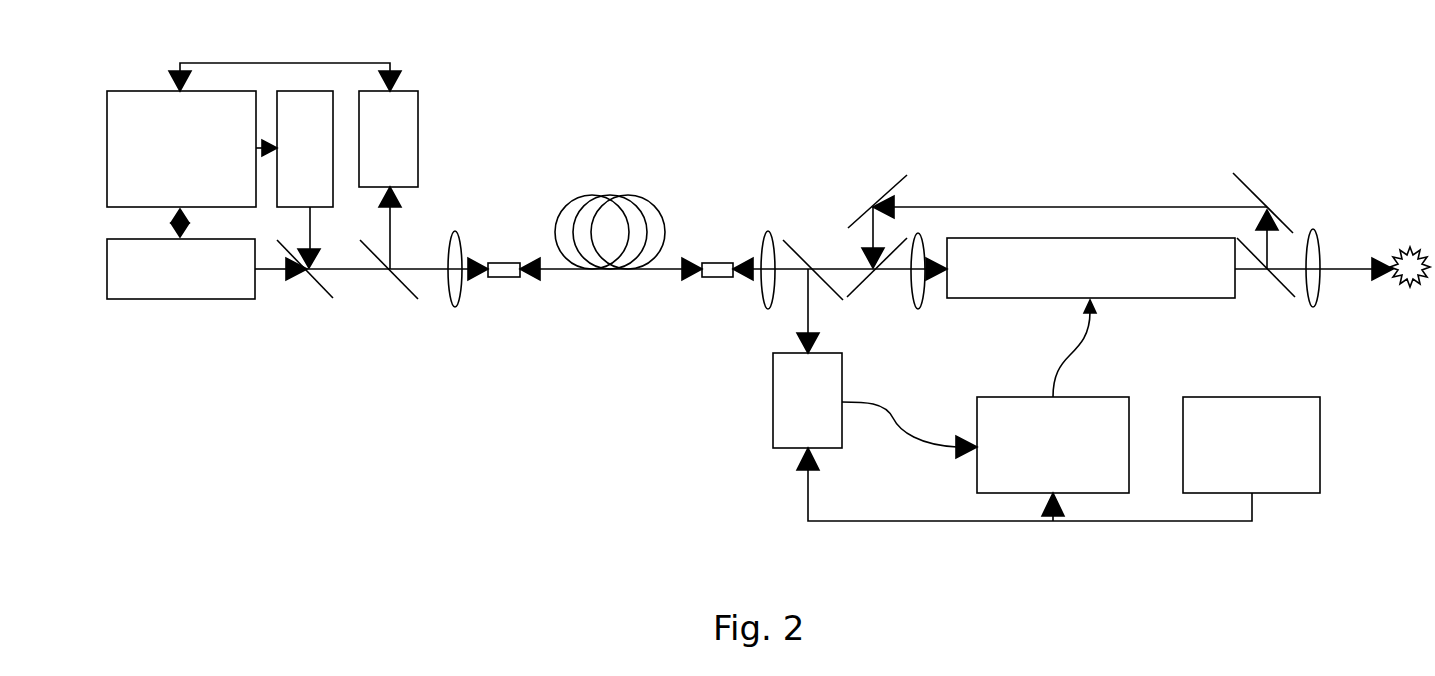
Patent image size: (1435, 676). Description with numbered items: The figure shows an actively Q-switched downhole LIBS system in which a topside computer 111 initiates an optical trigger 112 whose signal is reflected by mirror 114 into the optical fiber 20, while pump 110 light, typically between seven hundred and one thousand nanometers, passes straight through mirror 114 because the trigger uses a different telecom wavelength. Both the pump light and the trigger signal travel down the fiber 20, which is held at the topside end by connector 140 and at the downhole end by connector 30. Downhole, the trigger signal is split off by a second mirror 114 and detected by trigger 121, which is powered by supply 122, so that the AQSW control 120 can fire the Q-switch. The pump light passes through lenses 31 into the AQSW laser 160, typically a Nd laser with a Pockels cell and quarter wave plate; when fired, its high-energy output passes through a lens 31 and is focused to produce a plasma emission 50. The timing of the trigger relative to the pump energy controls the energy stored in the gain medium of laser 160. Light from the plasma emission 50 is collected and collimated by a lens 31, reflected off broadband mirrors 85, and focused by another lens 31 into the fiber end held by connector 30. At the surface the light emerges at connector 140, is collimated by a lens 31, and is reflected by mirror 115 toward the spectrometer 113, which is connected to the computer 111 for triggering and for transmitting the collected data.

The fiber 20 is at (610, 214).
The connector 30 is at (717, 257).
The lens 31 is at (447, 210).
The plasma emission 50 is at (1407, 246).
The broadband reflectivity mirror 85 is at (1071, 239).
The pump 110 is at (180, 299).
The topside computer 111 is at (181, 149).
The optical trigger 112 is at (310, 91).
The spectrometer 113 is at (417, 91).
The mirror 114 is at (560, 280).
The mirror 115 is at (391, 290).
The AQSW control 120 is at (1053, 445).
The trigger 121 is at (773, 406).
The supply 122 is at (1251, 445).
The connector 140 is at (504, 257).
The AQSW laser 160 is at (1091, 268).